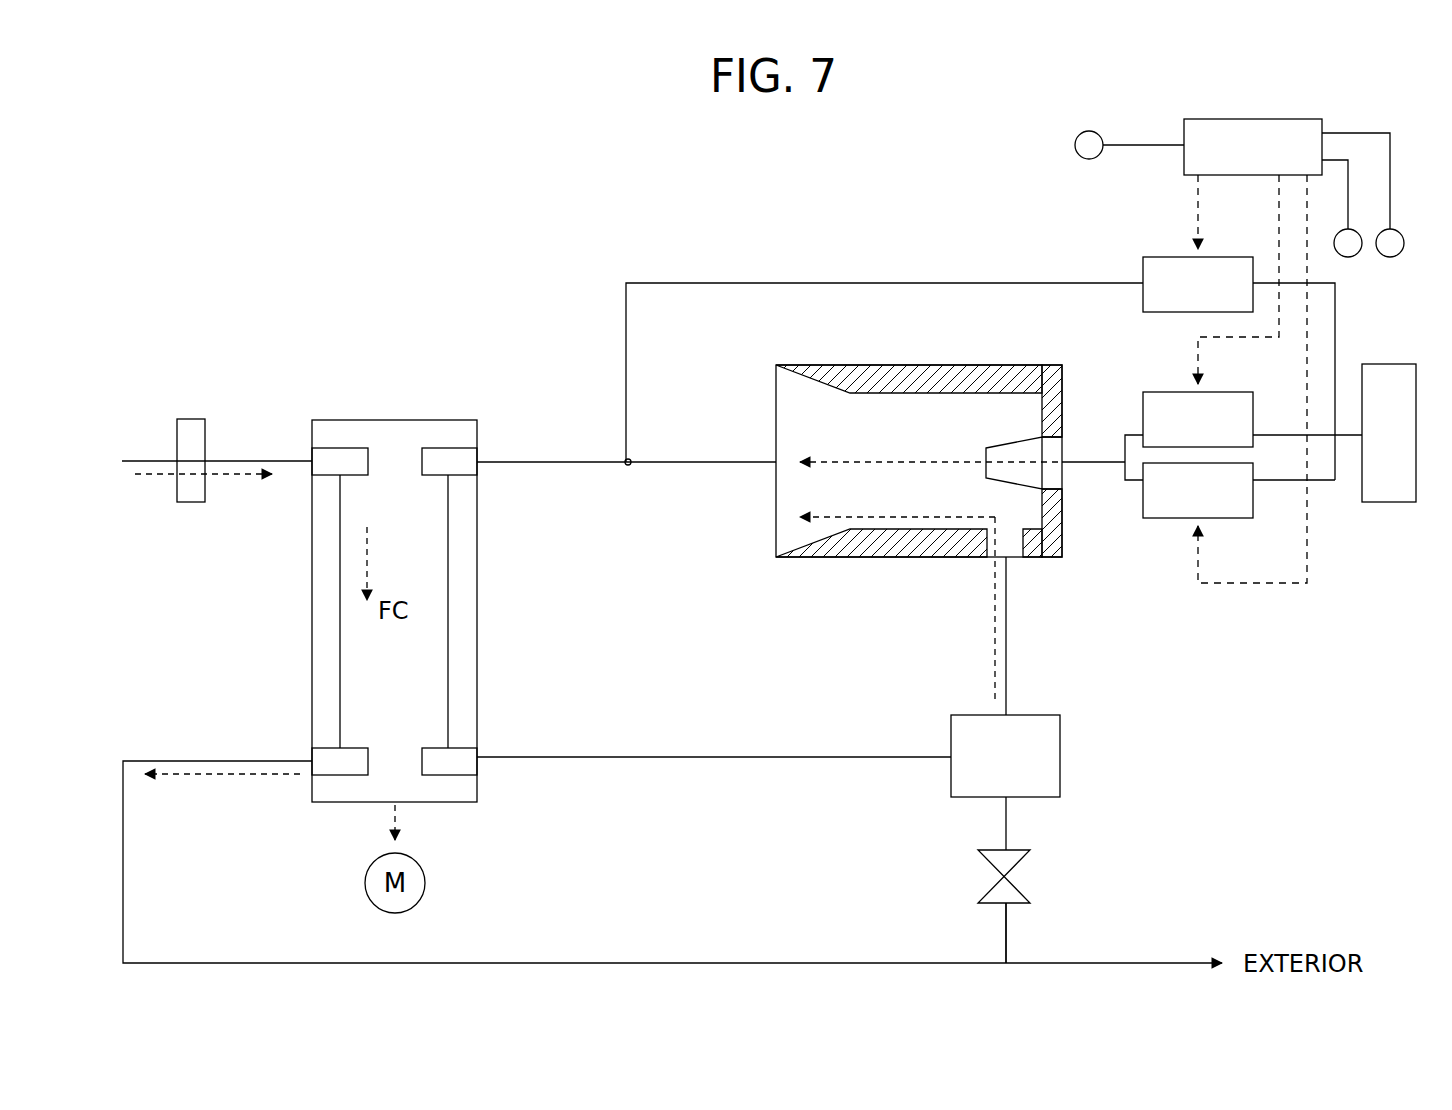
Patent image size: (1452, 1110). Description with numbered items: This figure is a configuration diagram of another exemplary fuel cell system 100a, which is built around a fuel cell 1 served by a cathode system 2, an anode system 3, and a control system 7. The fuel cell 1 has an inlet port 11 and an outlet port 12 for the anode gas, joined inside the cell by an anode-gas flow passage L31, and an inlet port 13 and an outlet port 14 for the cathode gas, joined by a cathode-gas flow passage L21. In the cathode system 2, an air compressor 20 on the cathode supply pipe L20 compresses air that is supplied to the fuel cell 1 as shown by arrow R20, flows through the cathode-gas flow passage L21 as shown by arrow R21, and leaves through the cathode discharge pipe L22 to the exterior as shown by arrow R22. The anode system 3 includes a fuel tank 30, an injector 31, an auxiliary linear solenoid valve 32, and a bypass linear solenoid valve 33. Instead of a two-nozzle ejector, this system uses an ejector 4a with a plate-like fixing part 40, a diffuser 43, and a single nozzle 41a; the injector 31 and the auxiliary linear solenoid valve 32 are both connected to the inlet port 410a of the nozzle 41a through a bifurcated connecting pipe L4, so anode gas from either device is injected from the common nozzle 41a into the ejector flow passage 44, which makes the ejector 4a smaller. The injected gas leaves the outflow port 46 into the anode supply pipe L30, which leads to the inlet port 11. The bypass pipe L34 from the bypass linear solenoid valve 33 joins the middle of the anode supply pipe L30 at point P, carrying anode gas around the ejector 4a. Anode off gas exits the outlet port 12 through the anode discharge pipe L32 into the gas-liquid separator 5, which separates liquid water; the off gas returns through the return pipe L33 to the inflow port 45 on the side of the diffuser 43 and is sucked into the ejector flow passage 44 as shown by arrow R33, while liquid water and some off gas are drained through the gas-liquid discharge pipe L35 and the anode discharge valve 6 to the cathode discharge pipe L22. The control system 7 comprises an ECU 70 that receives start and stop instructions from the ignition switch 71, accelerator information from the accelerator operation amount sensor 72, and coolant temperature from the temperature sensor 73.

The fuel cell system 100a is at (330, 245).
The fuel cell 1 is at (448, 420).
The cathode system 2 is at (270, 374).
The anode system 3 is at (978, 248).
The ejector 4a is at (946, 476).
The gas-liquid separator 5 is at (1038, 715).
The anode discharge valve 6 is at (1020, 850).
The control system 7 is at (1340, 112).
The inlet port 11 is at (450, 448).
The outlet port 12 is at (448, 775).
The inlet port 13 is at (340, 448).
The outlet port 14 is at (342, 775).
The air compressor 20 is at (192, 419).
The fuel tank 30 is at (1388, 364).
The injector 31 is at (1222, 392).
The auxiliary linear solenoid valve 32 is at (1253, 476).
The bypass linear solenoid valve 33 is at (1222, 257).
The fixing part 40 is at (1050, 365).
The nozzle 41a is at (1010, 448).
The inlet port 410a is at (1050, 447).
The diffuser 43 is at (880, 365).
The ejector flow passage 44 is at (900, 452).
The inflow port 45 is at (1015, 550).
The outflow port 46 is at (776, 412).
The ECU 70 is at (1293, 119).
The ignition switch 71 is at (1353, 230).
The accelerator operation amount sensor 72 is at (1394, 230).
The temperature sensor 73 is at (1100, 135).
The connecting pipe L4 is at (1085, 462).
The cathode supply pipe L20 is at (258, 446).
The cathode-gas flow passage L21 is at (338, 580).
The cathode discharge pipe L22 is at (258, 746).
The anode supply pipe L30 is at (668, 462).
The anode-gas flow passage L31 is at (448, 587).
The anode discharge pipe L32 is at (740, 746).
The return pipe L33 is at (1006, 676).
The bypass pipe L34 is at (885, 283).
The gas-liquid discharge pipe L35 is at (1006, 948).
The connection point P is at (628, 460).
The arrow R20 is at (207, 490).
The arrow R21 is at (375, 550).
The arrow R22 is at (222, 792).
The arrow R33 is at (961, 608).